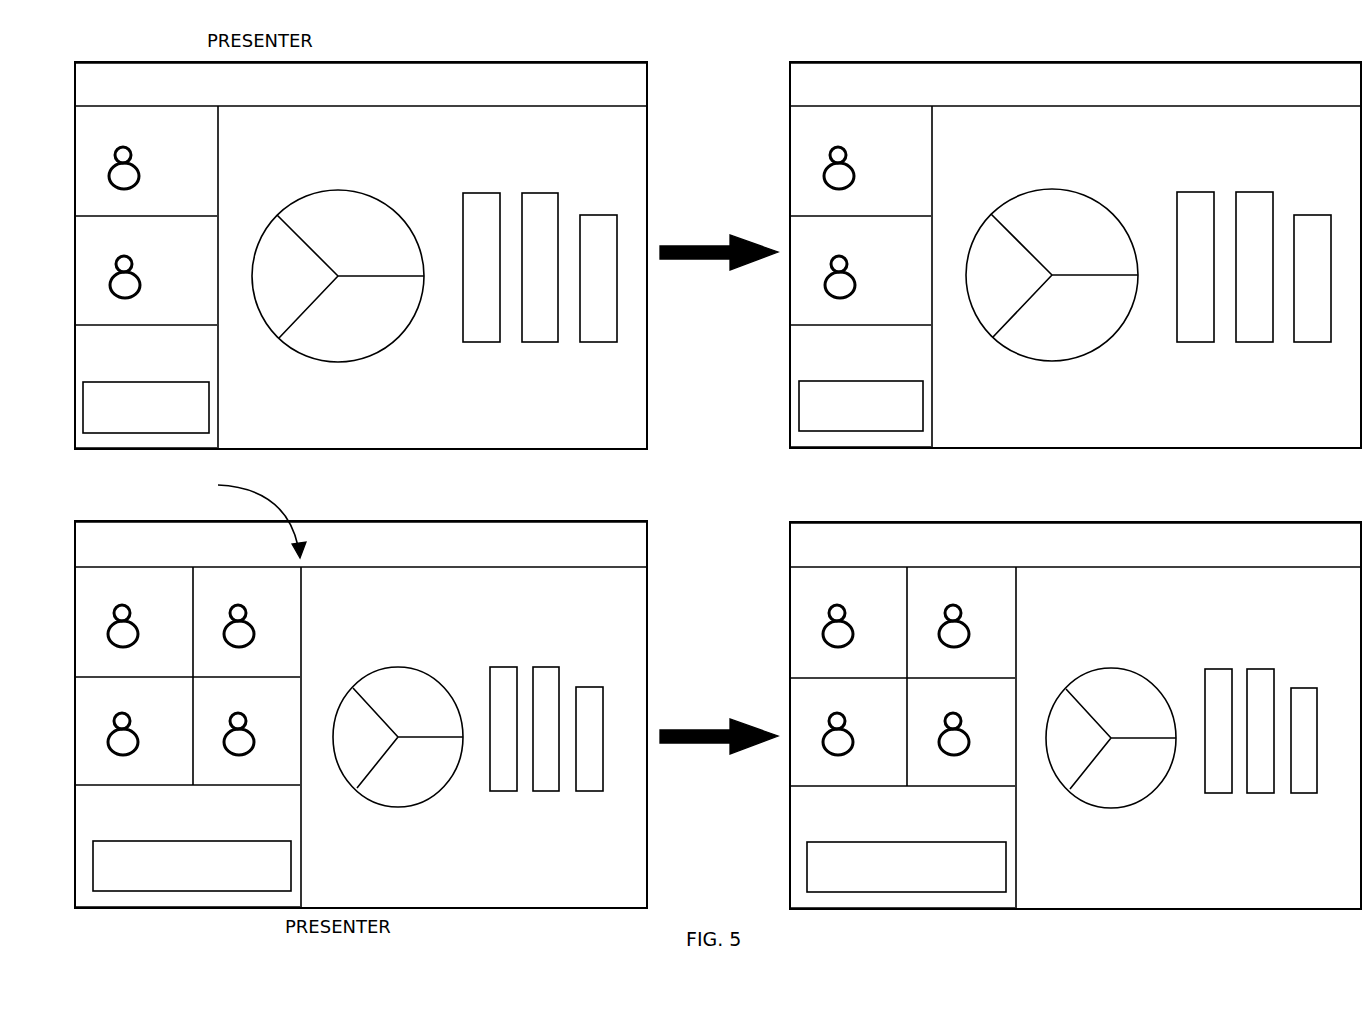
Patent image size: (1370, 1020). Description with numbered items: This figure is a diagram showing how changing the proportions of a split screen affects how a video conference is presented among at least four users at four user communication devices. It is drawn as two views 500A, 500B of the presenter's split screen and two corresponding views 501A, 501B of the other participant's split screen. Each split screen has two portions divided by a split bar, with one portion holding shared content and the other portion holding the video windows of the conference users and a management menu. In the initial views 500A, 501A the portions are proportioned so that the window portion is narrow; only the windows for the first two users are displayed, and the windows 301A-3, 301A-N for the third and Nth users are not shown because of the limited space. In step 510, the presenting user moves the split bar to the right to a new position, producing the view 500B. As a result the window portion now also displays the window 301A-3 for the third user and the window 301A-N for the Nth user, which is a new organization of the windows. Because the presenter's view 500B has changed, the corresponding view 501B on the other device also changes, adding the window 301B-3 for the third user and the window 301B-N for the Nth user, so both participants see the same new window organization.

The view of the split screen 500A is at (637, 75).
The view of the split screen 500B is at (637, 532).
The view of the split screen 501A is at (1270, 73).
The view of the split screen 501B is at (1270, 530).
The window 301A-3 is at (188, 734).
The window 301A-N is at (247, 731).
The window 301B-3 is at (903, 735).
The window 301B-N is at (962, 731).
The step 510 is at (284, 495).